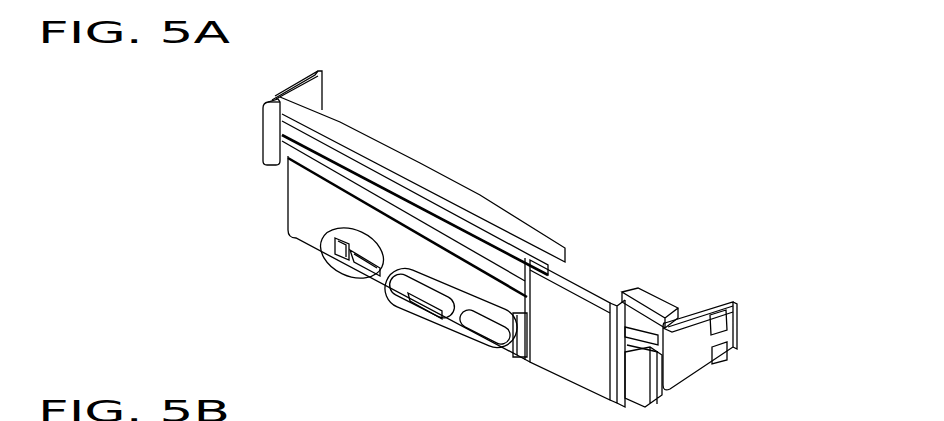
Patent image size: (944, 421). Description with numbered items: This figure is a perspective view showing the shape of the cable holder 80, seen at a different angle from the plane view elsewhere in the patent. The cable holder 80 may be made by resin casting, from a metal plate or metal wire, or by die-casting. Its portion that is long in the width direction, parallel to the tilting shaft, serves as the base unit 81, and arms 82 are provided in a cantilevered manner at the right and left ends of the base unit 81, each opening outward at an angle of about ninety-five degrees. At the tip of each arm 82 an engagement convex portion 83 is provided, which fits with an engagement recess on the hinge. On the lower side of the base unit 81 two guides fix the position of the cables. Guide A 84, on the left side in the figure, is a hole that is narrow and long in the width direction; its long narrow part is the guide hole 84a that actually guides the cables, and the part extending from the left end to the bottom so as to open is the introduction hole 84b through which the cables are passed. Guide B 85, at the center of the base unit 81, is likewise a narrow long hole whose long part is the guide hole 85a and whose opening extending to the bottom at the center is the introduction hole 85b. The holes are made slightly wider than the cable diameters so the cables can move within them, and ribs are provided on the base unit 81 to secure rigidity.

The cable holder 80 is at (803, 297).
The base unit 81 is at (540, 242).
The arm 82 is at (318, 93).
The engagement convex portion 83 is at (727, 324).
The guide A 84 is at (300, 243).
The guide hole 84a is at (363, 282).
The introduction hole 84b is at (340, 268).
The guide B 85 is at (523, 347).
The guide hole 85a is at (415, 306).
The introduction hole 85b is at (445, 321).